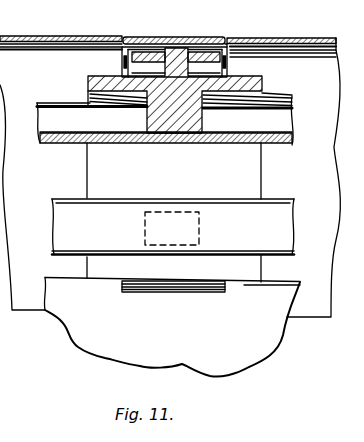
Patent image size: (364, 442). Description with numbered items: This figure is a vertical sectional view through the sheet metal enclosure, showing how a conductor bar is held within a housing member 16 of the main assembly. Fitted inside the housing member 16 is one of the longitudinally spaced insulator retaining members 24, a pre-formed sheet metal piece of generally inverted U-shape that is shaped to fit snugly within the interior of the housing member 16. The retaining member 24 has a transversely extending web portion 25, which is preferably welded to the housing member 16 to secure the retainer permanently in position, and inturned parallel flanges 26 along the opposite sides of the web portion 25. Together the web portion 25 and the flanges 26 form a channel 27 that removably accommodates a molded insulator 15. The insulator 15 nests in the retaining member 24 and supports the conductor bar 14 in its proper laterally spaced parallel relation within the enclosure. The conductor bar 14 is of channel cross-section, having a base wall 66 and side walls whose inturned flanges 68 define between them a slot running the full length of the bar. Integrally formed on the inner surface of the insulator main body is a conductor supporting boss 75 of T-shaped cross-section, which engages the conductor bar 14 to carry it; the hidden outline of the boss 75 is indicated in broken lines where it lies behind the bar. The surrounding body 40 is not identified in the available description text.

The conductor bar 14 is at (53, 122).
The molded insulator 15 is at (167, 37).
The housing member 16 is at (289, 40).
The insulator retaining member 24 is at (196, 40).
The web portion 25 is at (214, 43).
The inturned parallel flange 26 is at (117, 57).
The channel 27 is at (177, 93).
The base body 40 is at (97, 343).
The base wall 66 is at (43, 147).
The inturned flange 68 is at (65, 103).
The conductor supporting boss 75 is at (172, 118).